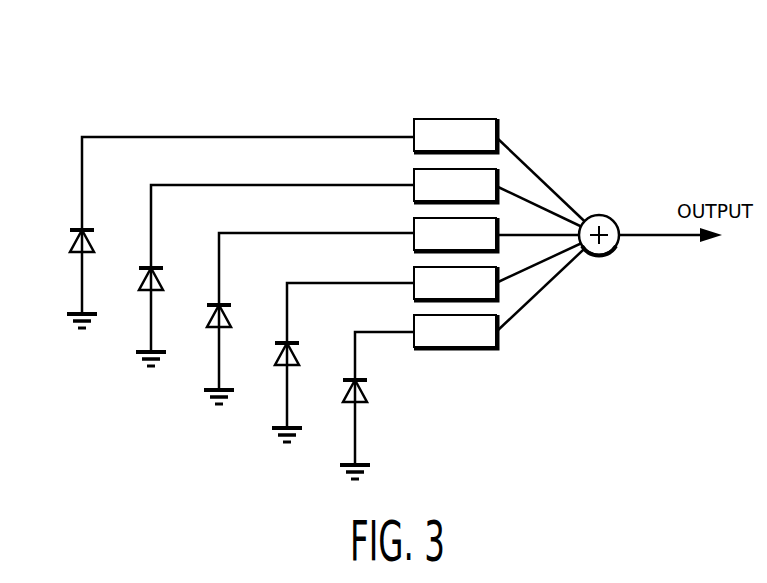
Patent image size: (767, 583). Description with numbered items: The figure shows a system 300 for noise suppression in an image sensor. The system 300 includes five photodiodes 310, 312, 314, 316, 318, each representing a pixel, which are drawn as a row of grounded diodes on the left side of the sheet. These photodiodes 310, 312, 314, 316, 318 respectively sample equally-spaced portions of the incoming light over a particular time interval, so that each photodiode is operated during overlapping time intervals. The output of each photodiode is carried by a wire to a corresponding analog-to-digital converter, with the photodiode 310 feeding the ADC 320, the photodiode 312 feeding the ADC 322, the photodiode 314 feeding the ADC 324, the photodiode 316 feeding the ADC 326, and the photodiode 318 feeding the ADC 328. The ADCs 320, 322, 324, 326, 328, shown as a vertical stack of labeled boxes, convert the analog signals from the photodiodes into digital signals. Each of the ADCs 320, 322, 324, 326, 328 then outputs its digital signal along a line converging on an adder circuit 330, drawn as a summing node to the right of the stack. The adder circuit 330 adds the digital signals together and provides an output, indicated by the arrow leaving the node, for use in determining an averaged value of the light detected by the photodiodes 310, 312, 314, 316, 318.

The system 300 is at (595, 74).
The photodiode 310 is at (78, 228).
The photodiode 312 is at (153, 267).
The photodiode 314 is at (222, 304).
The photodiode 316 is at (290, 342).
The photodiode 318 is at (368, 380).
The analog-to-digital converter 320 is at (485, 118).
The analog-to-digital converter 322 is at (414, 177).
The analog-to-digital converter 324 is at (414, 226).
The analog-to-digital converter 326 is at (414, 275).
The analog-to-digital converter 328 is at (498, 346).
The adder circuit 330 is at (607, 215).